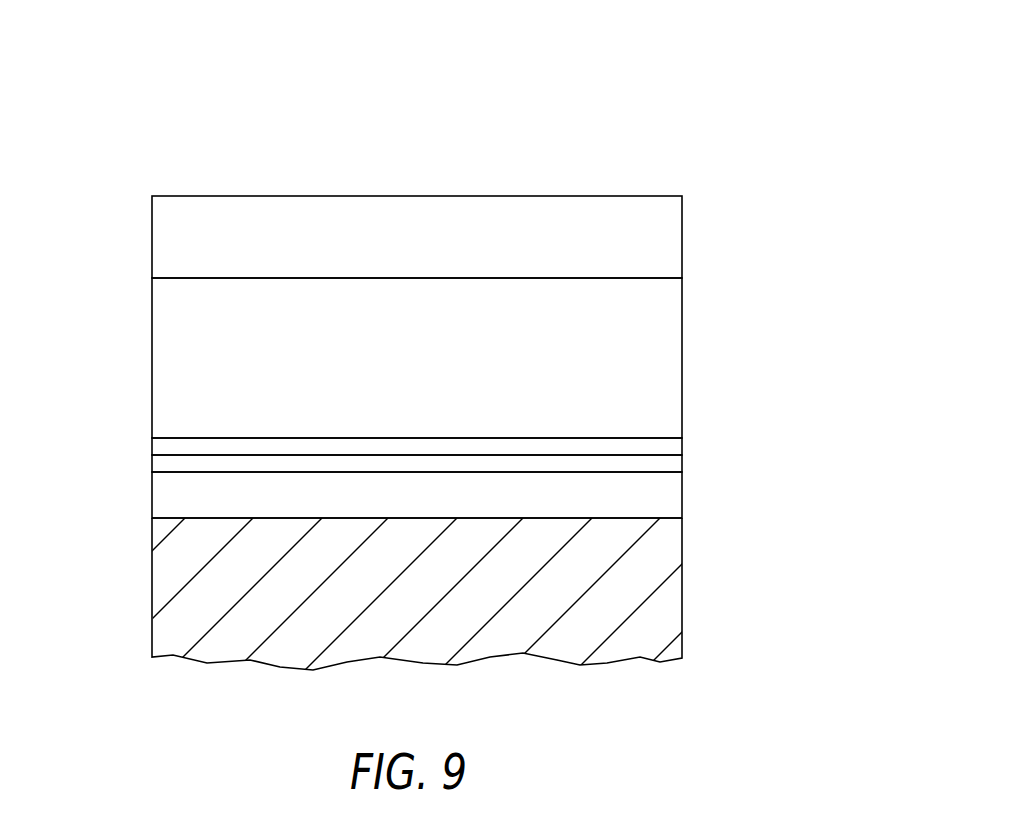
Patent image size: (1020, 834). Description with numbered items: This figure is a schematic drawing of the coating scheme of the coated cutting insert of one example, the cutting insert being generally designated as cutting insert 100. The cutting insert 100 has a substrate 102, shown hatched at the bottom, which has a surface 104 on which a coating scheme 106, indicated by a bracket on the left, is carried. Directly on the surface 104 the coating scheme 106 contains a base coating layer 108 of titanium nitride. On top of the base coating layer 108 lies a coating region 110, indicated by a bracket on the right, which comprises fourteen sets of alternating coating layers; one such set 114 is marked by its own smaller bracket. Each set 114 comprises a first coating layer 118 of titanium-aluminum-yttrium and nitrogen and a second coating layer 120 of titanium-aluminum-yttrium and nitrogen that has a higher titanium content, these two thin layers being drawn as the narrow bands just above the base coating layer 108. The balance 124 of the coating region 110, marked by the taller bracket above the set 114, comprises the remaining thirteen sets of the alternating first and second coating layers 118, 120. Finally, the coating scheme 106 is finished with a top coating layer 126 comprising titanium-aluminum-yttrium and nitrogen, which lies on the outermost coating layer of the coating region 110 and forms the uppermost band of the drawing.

The cutting insert 100 is at (612, 125).
The substrate 102 is at (652, 616).
The surface 104 is at (185, 518).
The coating scheme 106 is at (118, 196).
The base coating layer 108 is at (437, 506).
The coating region 110 is at (777, 278).
The set of alternating coating layers 114 is at (708, 438).
The first coating layer 118 is at (650, 445).
The second coating layer 120 is at (625, 465).
The balance of the coating region 124 is at (708, 278).
The top coating layer 126 is at (428, 256).